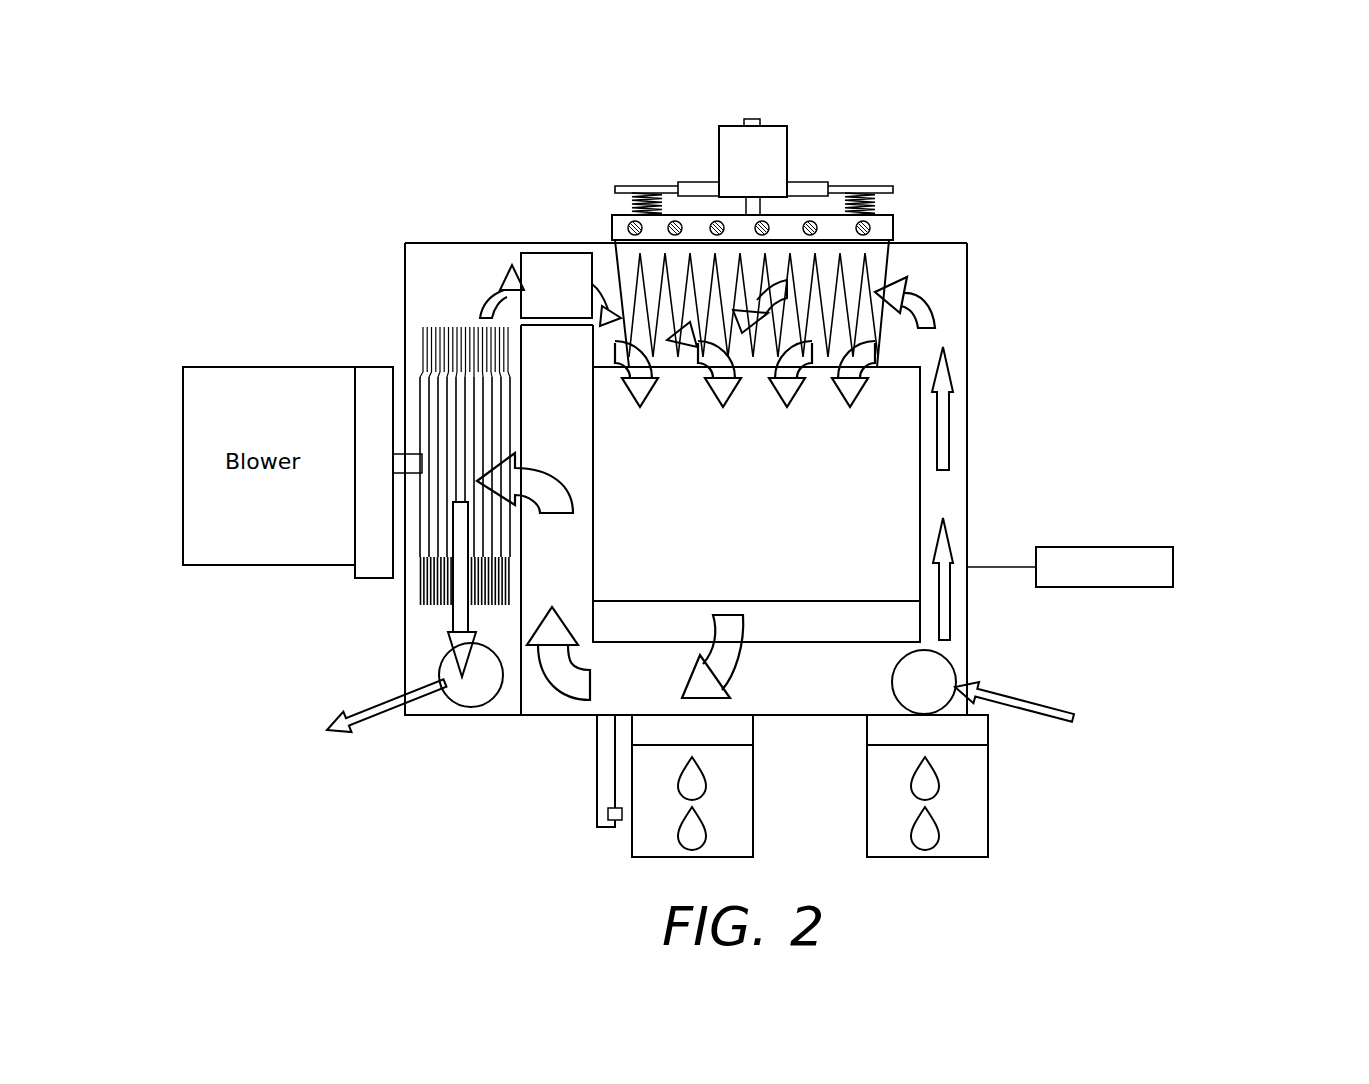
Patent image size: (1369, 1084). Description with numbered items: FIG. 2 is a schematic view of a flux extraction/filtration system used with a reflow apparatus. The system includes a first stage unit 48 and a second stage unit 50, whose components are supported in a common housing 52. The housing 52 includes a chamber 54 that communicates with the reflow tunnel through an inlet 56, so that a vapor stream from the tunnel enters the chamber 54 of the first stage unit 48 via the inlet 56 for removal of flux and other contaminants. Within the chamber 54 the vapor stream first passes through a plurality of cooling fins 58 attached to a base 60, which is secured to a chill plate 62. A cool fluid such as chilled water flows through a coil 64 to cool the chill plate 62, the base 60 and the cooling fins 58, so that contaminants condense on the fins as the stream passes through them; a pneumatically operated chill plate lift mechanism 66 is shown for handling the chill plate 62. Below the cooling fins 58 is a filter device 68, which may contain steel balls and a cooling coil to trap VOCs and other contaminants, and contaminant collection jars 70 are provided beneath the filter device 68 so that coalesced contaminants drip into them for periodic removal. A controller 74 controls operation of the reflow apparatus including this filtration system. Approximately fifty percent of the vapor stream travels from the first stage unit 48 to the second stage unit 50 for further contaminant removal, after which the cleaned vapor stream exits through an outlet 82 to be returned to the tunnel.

The first stage unit 48 is at (983, 374).
The second stage unit 50 is at (393, 308).
The housing 52 is at (406, 662).
The chamber 54 is at (970, 243).
The inlet 56 is at (950, 665).
The cooling fins 58 is at (888, 265).
The base 60 is at (613, 253).
The chill plate 62 is at (897, 222).
The coil 64 is at (717, 226).
The chill plate lift mechanism 66 is at (788, 126).
The filter device 68 is at (920, 508).
The jars 70 is at (757, 785).
The controller 74 is at (1090, 546).
The outlet 82 is at (468, 708).